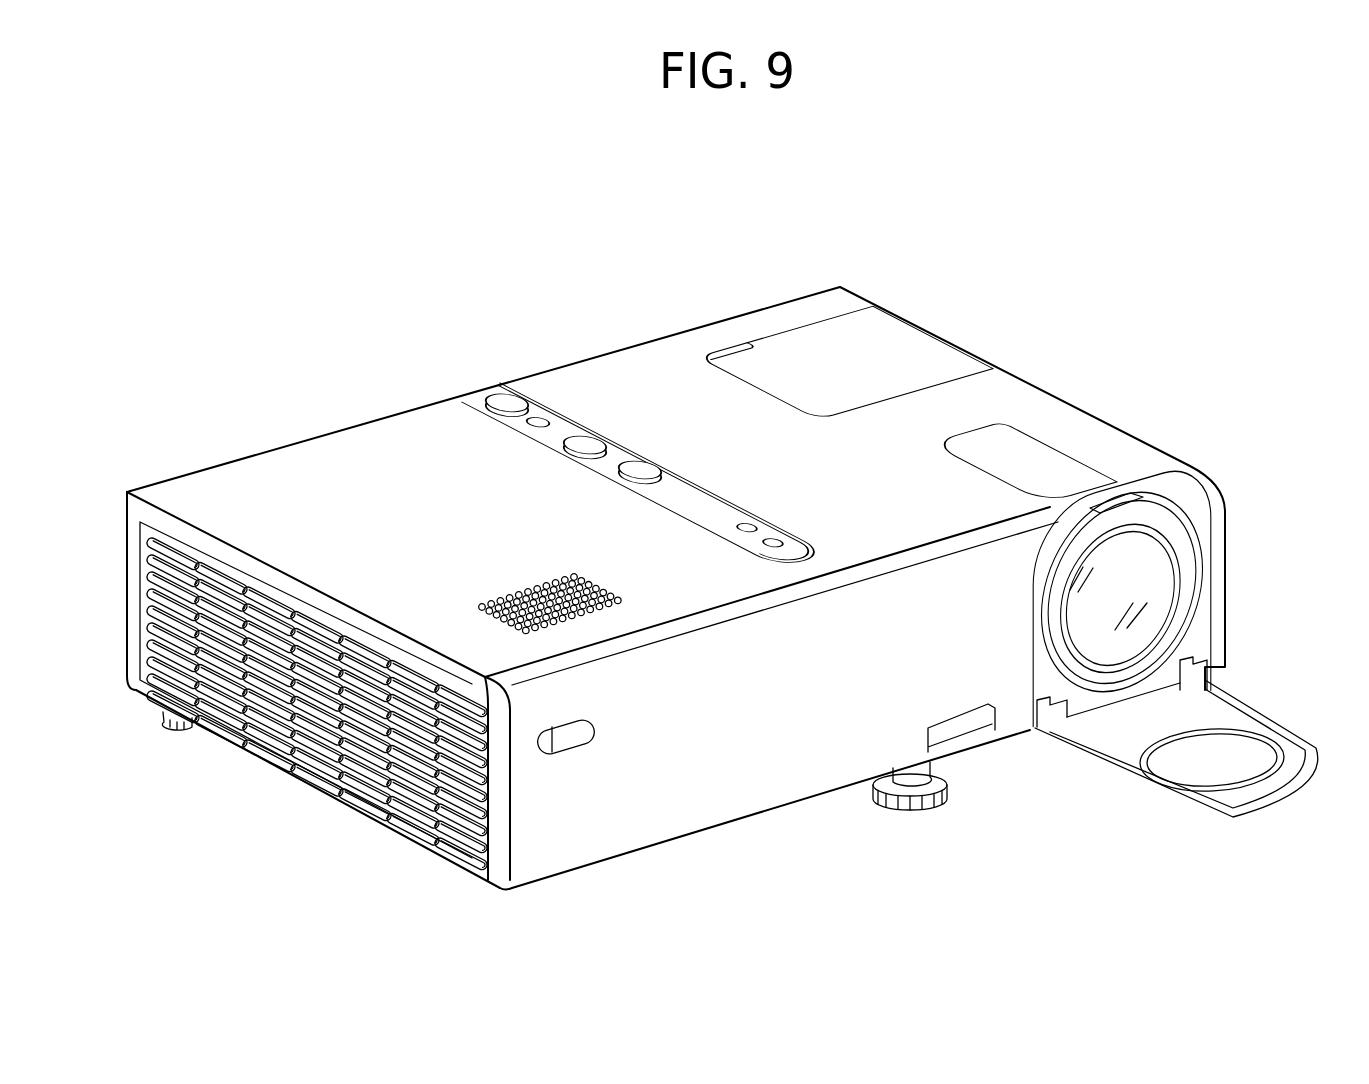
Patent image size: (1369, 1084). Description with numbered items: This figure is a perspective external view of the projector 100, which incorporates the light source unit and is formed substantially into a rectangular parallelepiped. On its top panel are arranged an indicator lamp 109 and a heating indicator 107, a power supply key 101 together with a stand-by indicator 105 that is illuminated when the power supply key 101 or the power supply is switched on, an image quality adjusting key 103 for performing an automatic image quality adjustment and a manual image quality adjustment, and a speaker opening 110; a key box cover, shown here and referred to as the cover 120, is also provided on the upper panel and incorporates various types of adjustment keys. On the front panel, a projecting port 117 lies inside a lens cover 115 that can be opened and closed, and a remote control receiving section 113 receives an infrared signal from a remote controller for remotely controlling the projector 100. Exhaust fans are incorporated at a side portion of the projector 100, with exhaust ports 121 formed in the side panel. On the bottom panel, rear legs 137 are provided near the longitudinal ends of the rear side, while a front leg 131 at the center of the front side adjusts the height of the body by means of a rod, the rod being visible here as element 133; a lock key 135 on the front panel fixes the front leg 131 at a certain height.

The projector 100 is at (880, 215).
The power supply key 101 is at (505, 400).
The image quality adjusting key 103 is at (594, 435).
The stand-by indicator 105 is at (547, 417).
The heating indicator 107 is at (753, 527).
The indicator lamp 109 is at (780, 541).
The speaker opening 110 is at (542, 588).
The remote control receiving section 113 is at (572, 745).
The lens cover 115 is at (1143, 800).
The projecting port 117 is at (1172, 540).
The lamp cover 120 is at (920, 345).
The exhaust ports 121 is at (263, 727).
The front leg 131 is at (923, 805).
The foot screw 133 is at (905, 778).
The lock key 135 is at (983, 745).
The rear legs 137 is at (173, 730).